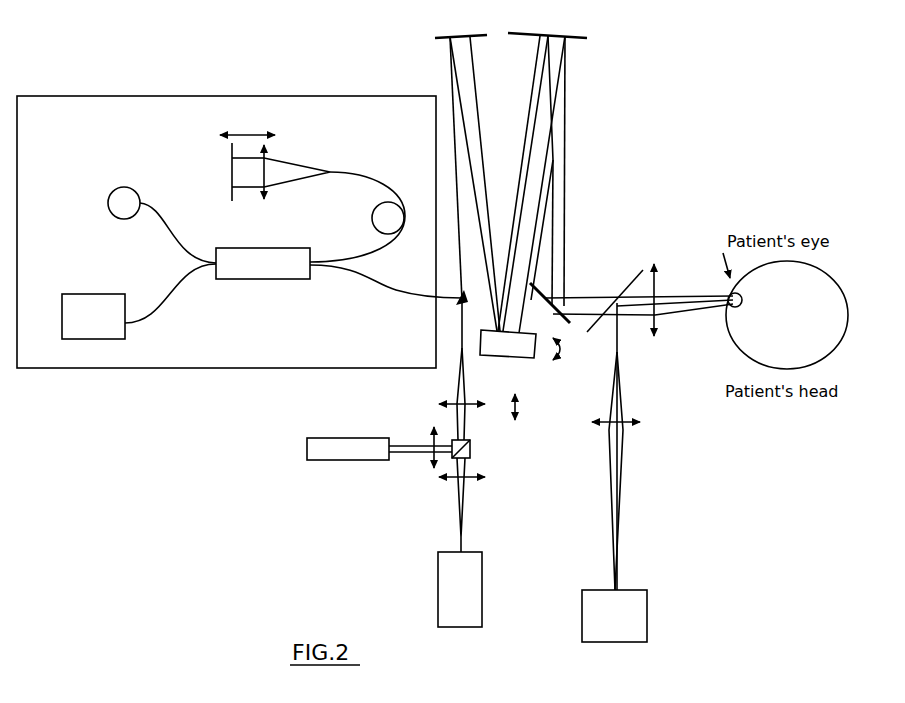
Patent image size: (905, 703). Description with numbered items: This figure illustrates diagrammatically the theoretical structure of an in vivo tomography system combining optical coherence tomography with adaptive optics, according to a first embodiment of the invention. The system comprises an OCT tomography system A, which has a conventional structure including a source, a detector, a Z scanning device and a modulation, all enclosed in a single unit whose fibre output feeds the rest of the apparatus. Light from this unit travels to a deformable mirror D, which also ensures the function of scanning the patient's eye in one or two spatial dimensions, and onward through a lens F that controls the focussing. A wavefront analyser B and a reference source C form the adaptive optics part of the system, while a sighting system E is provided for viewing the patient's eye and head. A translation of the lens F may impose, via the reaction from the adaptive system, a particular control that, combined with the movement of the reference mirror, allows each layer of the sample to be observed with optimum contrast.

The OCT tomography system A is at (239, 232).
The wavefront analyser B is at (460, 589).
The reference source C is at (348, 449).
The deformable mirror D is at (520, 345).
The sighting system E is at (614, 616).
The lens F is at (527, 407).